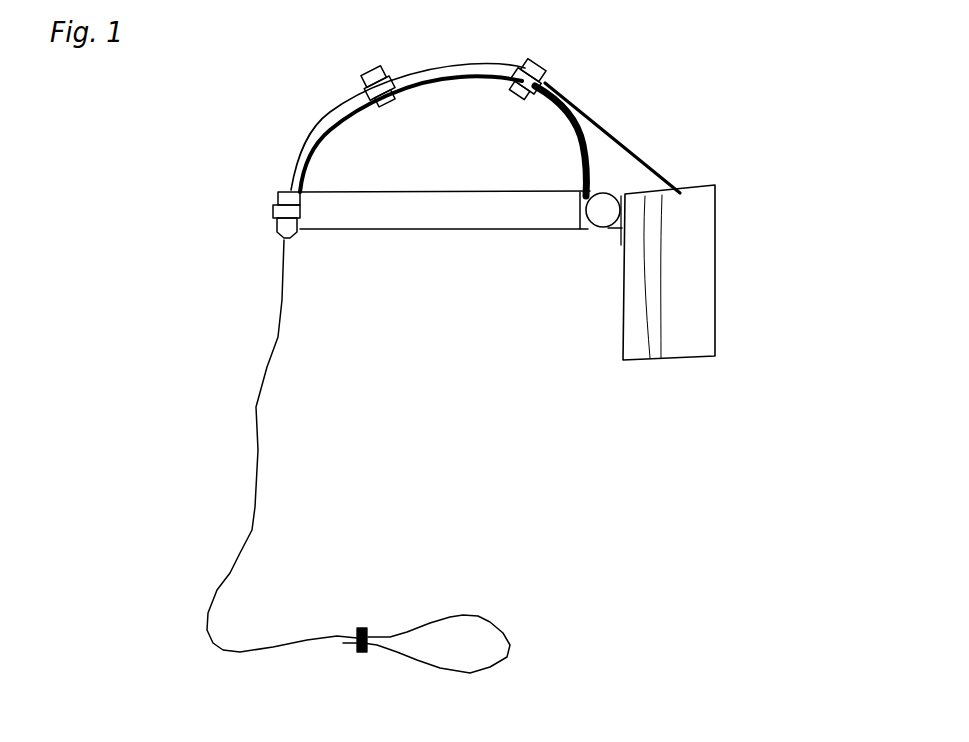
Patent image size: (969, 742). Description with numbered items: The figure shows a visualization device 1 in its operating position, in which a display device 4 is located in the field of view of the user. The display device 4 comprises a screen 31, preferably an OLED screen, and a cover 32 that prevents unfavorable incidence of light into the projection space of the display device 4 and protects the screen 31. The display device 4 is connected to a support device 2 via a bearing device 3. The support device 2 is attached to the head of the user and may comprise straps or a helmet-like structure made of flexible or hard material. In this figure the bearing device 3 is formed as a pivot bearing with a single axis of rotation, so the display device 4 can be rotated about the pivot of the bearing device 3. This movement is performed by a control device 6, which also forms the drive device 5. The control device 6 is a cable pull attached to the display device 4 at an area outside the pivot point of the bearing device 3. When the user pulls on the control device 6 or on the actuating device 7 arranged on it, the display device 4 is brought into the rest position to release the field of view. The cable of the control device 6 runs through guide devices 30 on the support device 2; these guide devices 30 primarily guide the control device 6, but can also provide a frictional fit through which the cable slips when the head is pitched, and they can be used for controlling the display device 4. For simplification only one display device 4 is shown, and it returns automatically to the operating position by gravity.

The visualization device 1 is at (771, 103).
The support device 2 is at (580, 173).
The bearing device 3 is at (601, 206).
The display device 4 is at (722, 307).
The drive device 5 is at (682, 191).
The control device 6 is at (478, 326).
The actuating device 7 is at (447, 630).
The guide device 30 is at (373, 78).
The screen 31 is at (657, 350).
The cover 32 is at (700, 232).